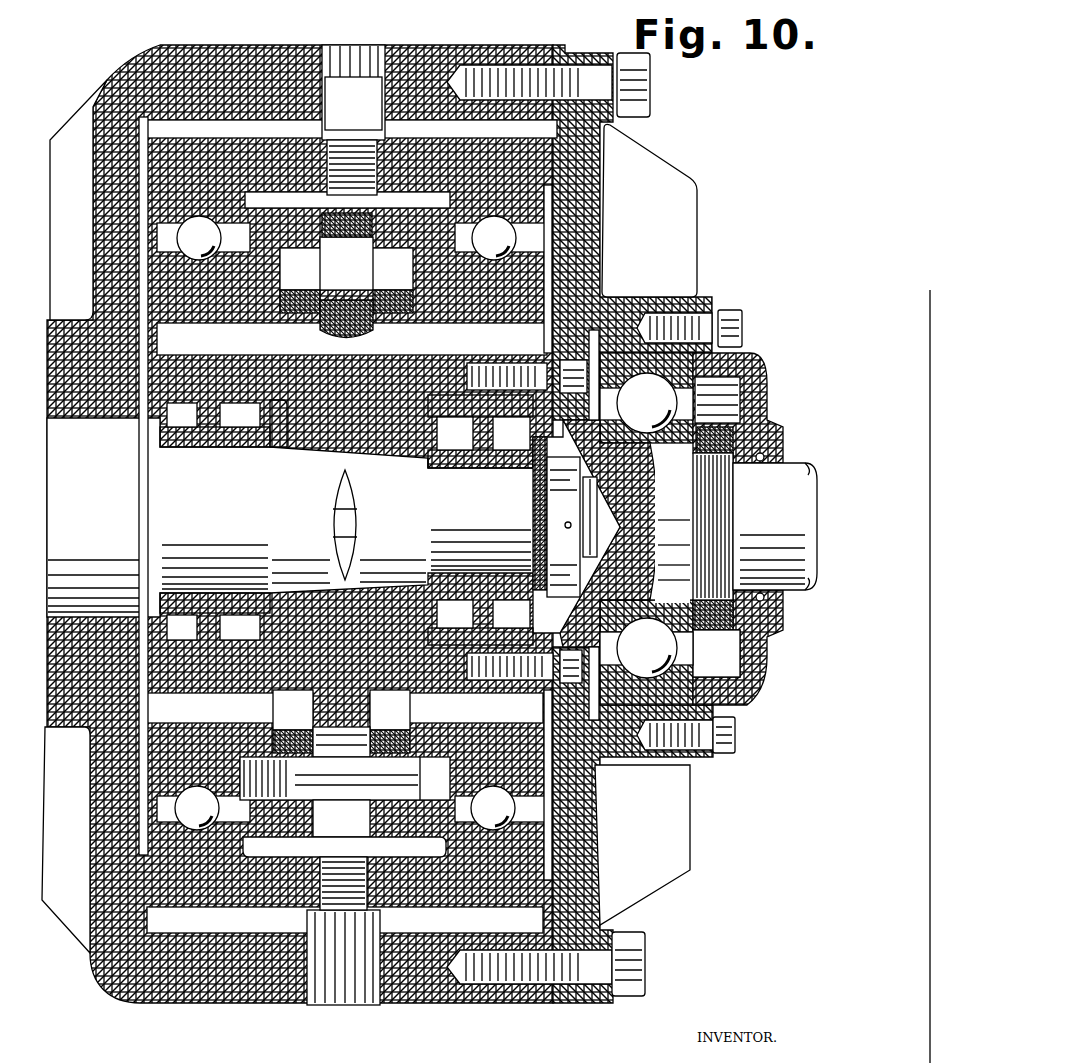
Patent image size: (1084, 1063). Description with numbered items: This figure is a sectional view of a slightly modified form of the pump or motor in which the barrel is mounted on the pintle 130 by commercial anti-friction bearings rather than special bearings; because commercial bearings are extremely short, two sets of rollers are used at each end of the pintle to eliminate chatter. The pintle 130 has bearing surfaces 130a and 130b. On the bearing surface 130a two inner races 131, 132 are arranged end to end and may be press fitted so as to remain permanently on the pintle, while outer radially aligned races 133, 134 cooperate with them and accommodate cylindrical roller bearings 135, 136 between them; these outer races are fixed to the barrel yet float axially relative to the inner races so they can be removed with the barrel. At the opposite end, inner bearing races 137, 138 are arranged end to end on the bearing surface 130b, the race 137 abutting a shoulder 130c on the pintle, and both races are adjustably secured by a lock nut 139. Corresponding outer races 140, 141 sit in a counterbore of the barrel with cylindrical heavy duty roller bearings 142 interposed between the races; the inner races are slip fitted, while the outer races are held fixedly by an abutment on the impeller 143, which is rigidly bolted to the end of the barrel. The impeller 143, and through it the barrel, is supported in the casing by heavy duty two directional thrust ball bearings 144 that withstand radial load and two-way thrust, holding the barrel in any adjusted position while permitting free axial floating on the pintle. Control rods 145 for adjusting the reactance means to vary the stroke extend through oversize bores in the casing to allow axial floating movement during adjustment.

The pintle 130 is at (284, 476).
The bearing surface 130a is at (188, 513).
The bearing surface 130b is at (442, 527).
The shoulder 130c is at (428, 462).
The inner race 131 is at (217, 428).
The inner race 132 is at (257, 430).
The outer race 133 is at (145, 418).
The outer race 134 is at (283, 430).
The cylindrical roller bearing 135 is at (187, 410).
The cylindrical roller bearing 136 is at (233, 412).
The inner bearing race 137 is at (488, 447).
The inner bearing race 138 is at (548, 466).
The lock nut 139 is at (583, 492).
The outer race 140 is at (460, 447).
The outer race 141 is at (495, 420).
The cylindrical heavy duty roller bearing 142 is at (480, 420).
The impeller 143 is at (775, 526).
The two directional thrust ball bearing 144 is at (641, 525).
The control rod 145 is at (348, 92).